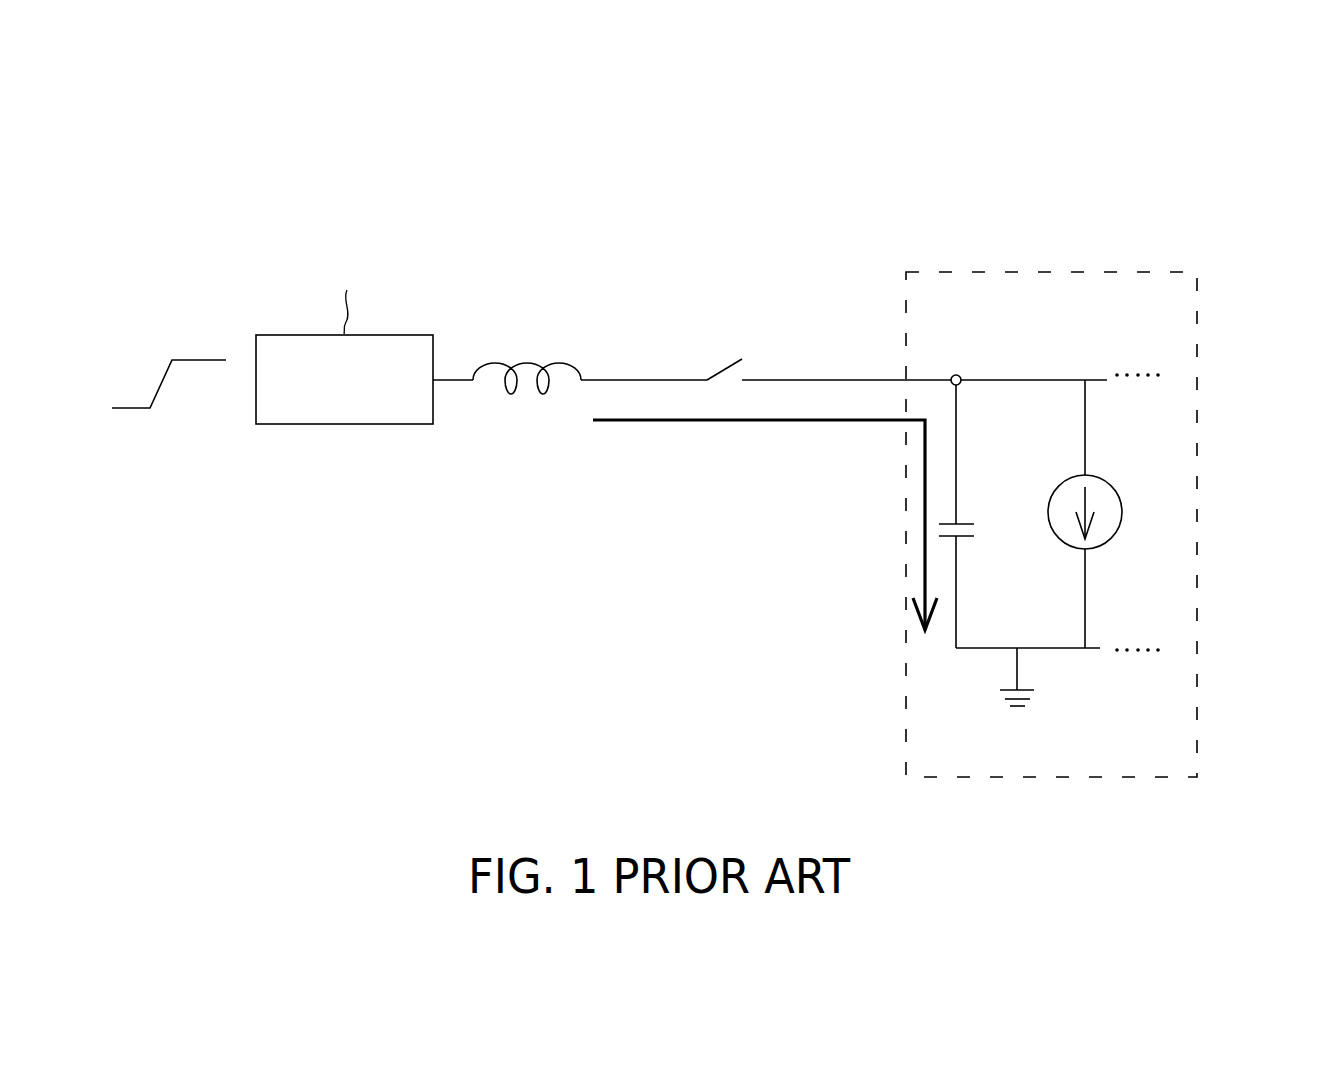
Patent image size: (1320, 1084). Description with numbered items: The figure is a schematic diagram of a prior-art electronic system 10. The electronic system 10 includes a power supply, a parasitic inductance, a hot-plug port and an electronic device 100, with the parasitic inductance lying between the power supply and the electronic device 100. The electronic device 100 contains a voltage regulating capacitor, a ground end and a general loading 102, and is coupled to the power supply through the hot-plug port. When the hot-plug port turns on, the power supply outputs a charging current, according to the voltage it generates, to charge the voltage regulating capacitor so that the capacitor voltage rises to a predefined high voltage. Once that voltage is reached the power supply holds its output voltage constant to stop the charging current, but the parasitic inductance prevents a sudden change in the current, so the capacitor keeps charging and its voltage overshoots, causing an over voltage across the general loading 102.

The electronic system 10 is at (1150, 176).
The electronic device 100 is at (1049, 271).
The general loading 102 is at (1123, 512).